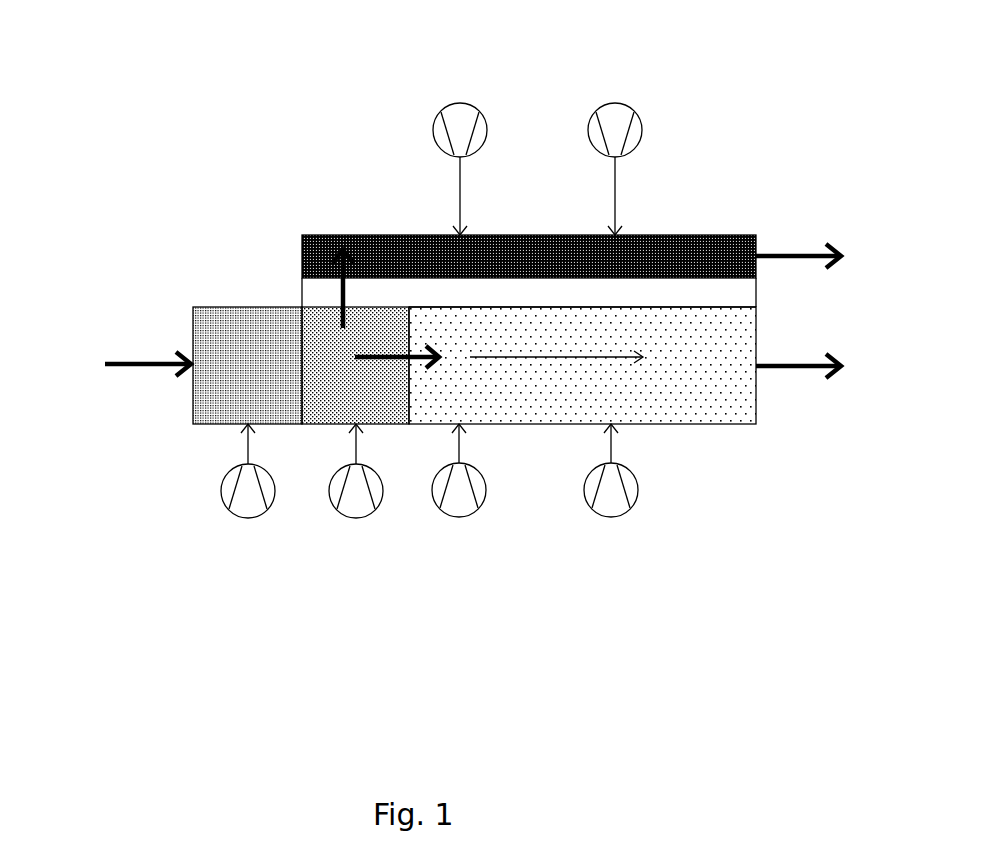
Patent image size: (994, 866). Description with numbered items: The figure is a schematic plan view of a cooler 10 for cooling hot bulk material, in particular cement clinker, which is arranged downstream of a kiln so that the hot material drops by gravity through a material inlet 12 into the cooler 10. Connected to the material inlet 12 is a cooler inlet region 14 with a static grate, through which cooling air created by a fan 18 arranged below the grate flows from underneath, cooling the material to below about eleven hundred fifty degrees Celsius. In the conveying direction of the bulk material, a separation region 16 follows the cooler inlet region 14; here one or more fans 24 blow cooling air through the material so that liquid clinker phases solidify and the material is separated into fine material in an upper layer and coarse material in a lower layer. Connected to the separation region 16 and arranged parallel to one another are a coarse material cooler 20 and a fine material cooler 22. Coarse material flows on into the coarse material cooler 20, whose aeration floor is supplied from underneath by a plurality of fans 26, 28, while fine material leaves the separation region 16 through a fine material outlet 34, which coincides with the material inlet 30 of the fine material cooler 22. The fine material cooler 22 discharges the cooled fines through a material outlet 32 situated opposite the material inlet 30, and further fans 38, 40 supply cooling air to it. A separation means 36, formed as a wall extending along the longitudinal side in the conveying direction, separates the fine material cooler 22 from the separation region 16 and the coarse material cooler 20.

The cooler 10 is at (88, 100).
The material inlet 12 is at (132, 368).
The cooler inlet region 14 is at (262, 380).
The separation region 16 is at (322, 407).
The fan 18 is at (245, 502).
The coarse material cooler 20 is at (627, 382).
The fine material cooler 22 is at (302, 253).
The fan 24 is at (355, 502).
The fan 26 is at (457, 502).
The fan 28 is at (605, 508).
The material inlet 30 is at (342, 297).
The material outlet 32 is at (810, 252).
The fine material outlet 34 is at (352, 289).
The separation means 36 is at (400, 290).
The fan 38 is at (455, 128).
The fan 40 is at (615, 128).